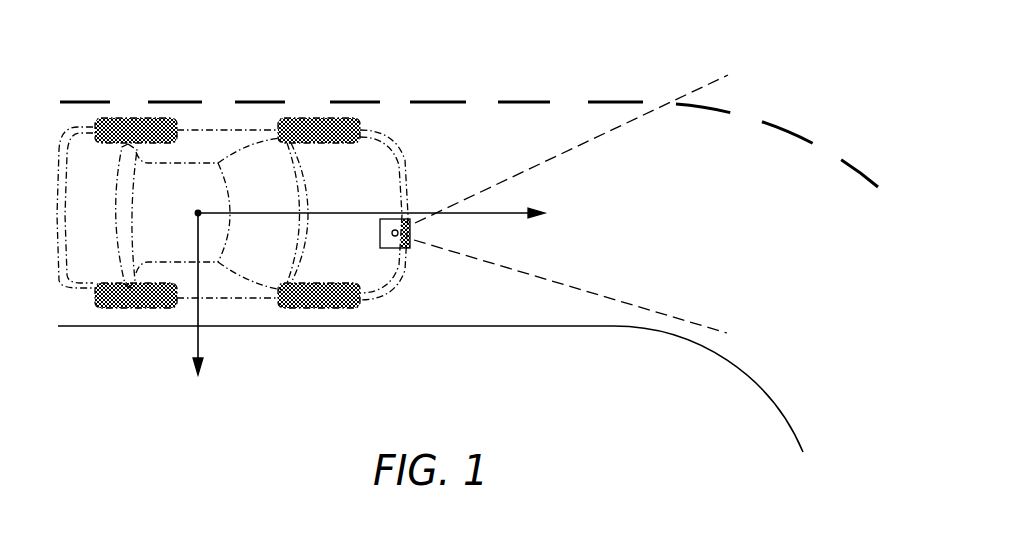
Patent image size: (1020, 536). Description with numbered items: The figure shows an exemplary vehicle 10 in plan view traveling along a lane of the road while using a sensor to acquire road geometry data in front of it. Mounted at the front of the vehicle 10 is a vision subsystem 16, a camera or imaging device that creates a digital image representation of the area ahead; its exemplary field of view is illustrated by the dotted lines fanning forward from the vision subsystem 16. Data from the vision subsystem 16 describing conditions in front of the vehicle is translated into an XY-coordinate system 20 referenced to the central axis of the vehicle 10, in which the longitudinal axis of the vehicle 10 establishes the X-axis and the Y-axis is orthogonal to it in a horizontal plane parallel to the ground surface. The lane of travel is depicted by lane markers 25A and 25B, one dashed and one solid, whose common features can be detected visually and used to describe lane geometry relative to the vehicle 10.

The vehicle 10 is at (215, 158).
The vision subsystem 16 is at (411, 247).
The XY-coordinate system 20 is at (197, 338).
The lane marker 25A is at (443, 101).
The lane marker 25B is at (413, 327).